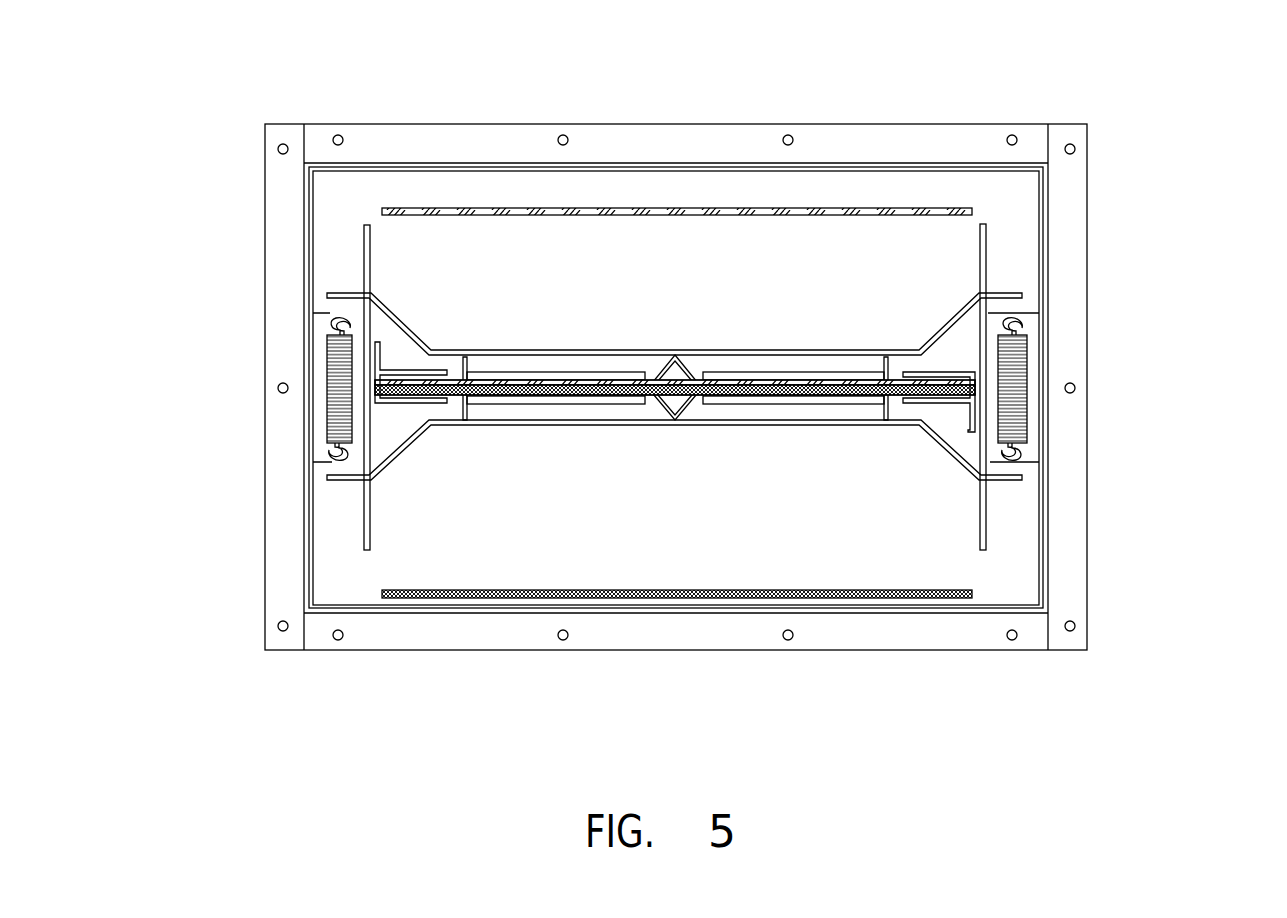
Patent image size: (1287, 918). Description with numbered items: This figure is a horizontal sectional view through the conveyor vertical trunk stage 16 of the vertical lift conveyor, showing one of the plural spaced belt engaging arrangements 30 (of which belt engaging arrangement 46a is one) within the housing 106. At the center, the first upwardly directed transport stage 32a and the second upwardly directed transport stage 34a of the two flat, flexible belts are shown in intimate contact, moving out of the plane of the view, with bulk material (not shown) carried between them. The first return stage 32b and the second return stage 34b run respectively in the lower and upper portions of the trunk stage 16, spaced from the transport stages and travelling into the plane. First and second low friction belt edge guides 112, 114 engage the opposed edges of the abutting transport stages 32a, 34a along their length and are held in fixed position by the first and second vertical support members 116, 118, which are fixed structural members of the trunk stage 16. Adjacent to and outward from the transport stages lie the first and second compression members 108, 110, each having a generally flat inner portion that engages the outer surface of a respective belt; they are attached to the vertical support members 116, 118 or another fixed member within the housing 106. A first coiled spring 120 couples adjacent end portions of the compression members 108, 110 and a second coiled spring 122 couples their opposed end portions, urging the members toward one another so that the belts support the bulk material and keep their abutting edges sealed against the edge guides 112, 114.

The conveyor vertical trunk stage 16 is at (385, 710).
The belt engaging arrangement 30 is at (660, 188).
The first upwardly directed transport stage 32a is at (605, 395).
The first return stage 32b is at (855, 598).
The second upwardly directed transport stage 34a is at (547, 381).
The second return stage 34b is at (810, 208).
The belt engaging arrangement 46a is at (622, 514).
The housing 106 is at (744, 656).
The first compression member 108 is at (770, 425).
The second compression member 110 is at (640, 352).
The first low friction belt edge guide 112 is at (397, 401).
The second low friction belt edge guide 114 is at (950, 374).
The first vertical support member 116 is at (365, 270).
The second vertical support member 118 is at (983, 242).
The first coiled spring 120 is at (340, 390).
The second coiled spring 122 is at (1022, 378).